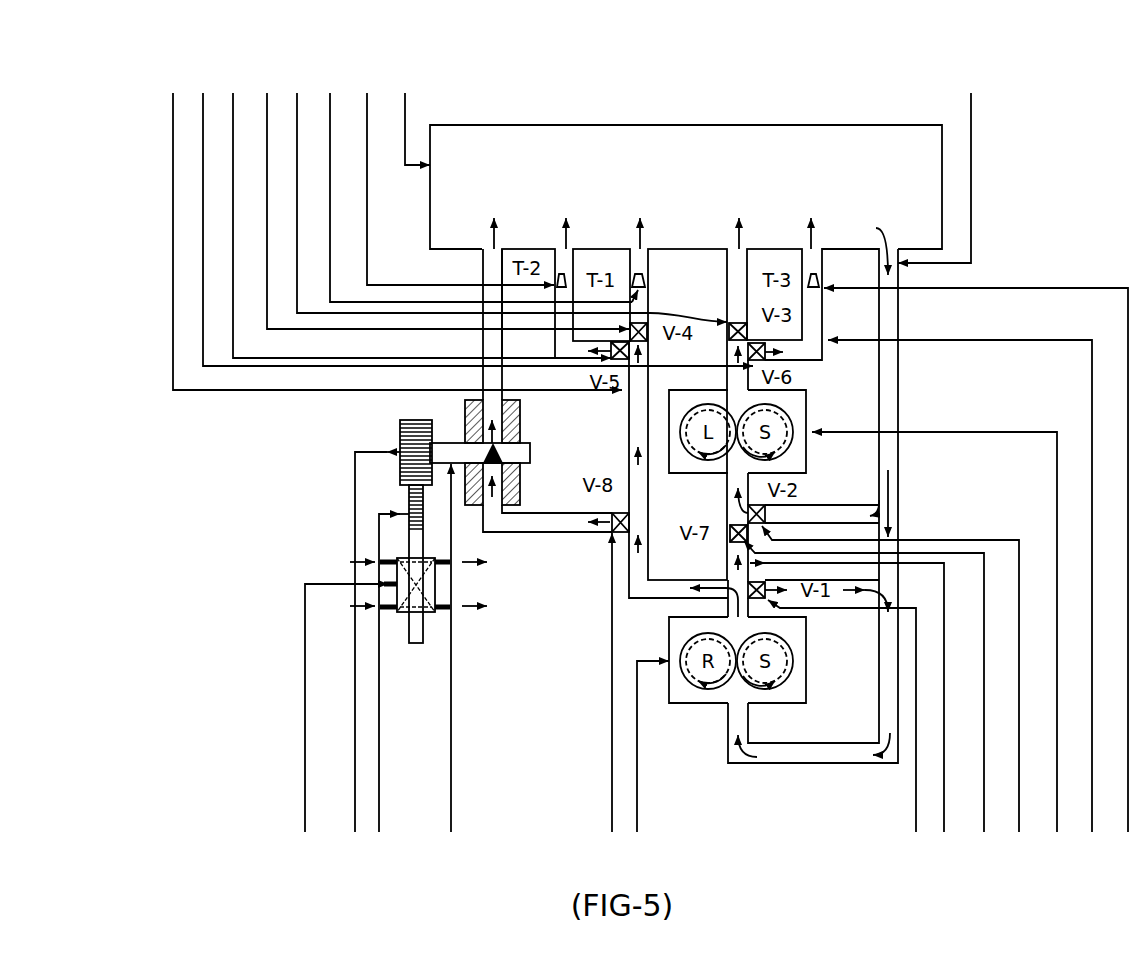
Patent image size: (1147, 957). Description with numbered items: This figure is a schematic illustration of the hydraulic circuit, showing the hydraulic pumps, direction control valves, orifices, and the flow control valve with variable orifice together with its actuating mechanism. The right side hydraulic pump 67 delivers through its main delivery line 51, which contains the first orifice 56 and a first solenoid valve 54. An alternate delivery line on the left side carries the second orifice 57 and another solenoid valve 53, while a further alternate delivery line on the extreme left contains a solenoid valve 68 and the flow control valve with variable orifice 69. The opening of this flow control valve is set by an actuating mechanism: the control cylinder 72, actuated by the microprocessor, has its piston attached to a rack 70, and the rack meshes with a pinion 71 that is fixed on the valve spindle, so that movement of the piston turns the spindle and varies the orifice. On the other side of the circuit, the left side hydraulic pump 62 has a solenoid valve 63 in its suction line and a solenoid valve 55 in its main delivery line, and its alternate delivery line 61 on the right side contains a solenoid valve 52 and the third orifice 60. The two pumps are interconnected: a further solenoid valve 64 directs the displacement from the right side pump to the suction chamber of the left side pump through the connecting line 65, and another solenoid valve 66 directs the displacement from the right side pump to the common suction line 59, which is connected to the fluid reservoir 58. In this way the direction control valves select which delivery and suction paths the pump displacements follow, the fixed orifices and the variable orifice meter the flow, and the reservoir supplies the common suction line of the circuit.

The main delivery line 51 is at (173, 93).
The solenoid valve (V6) 52 is at (203, 93).
The solenoid valve (V5) 53 is at (233, 93).
The solenoid valve (V4) 54 is at (267, 93).
The solenoid valve (V3) 55 is at (297, 93).
The orifice (T-1) 56 is at (330, 93).
The orifice (T-2) 57 is at (367, 93).
The fluid reservoir 58 is at (405, 93).
The common suction line 59 is at (971, 93).
The orifice (T-3) 60 is at (1128, 832).
The alternate delivery line 61 is at (1092, 832).
The left side (LS) hydraulic pump 62 is at (1057, 832).
The solenoid valve (V-2) 63 is at (1019, 832).
The solenoid valve (V-7) 64 is at (984, 832).
The connecting line 65 is at (944, 832).
The solenoid valve (V-1) 66 is at (916, 832).
The right side (RS) hydraulic pump 67 is at (637, 832).
The solenoid valve (V8) 68 is at (612, 832).
The flow control valve with variable orifice 69 is at (451, 832).
The rack 70 is at (379, 832).
The pinion 71 is at (355, 832).
The control cylinder 72 is at (305, 832).